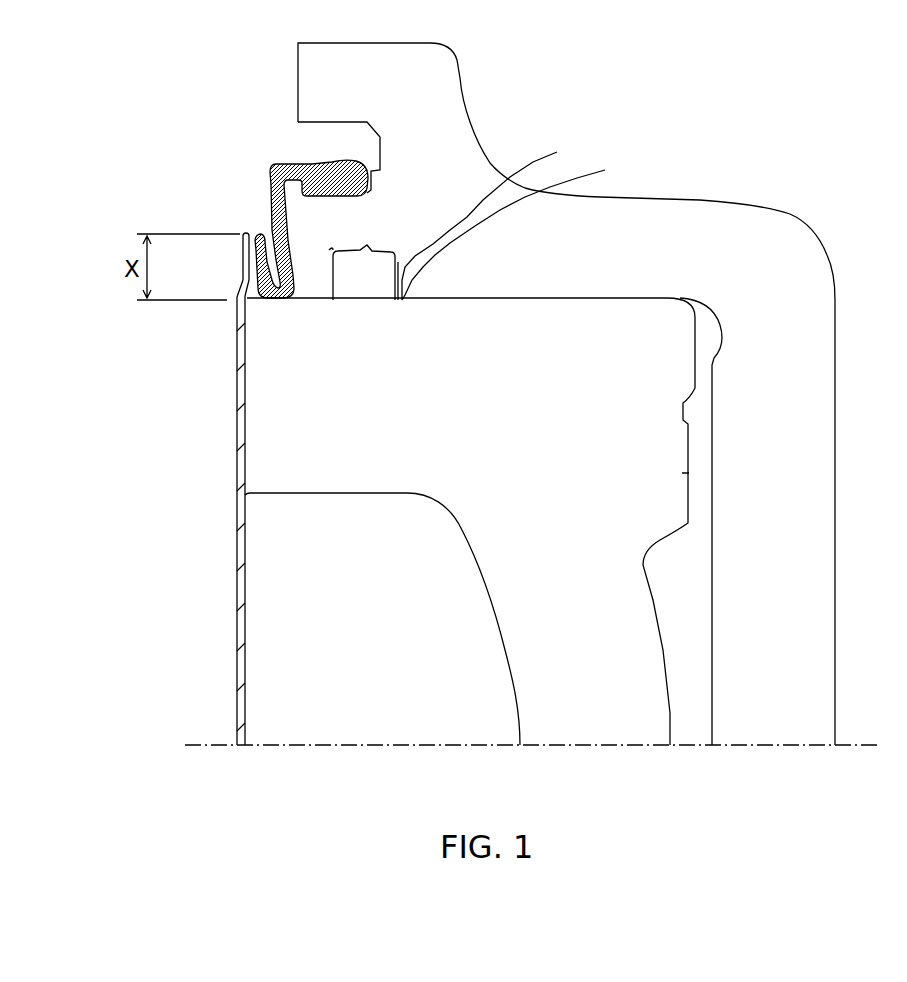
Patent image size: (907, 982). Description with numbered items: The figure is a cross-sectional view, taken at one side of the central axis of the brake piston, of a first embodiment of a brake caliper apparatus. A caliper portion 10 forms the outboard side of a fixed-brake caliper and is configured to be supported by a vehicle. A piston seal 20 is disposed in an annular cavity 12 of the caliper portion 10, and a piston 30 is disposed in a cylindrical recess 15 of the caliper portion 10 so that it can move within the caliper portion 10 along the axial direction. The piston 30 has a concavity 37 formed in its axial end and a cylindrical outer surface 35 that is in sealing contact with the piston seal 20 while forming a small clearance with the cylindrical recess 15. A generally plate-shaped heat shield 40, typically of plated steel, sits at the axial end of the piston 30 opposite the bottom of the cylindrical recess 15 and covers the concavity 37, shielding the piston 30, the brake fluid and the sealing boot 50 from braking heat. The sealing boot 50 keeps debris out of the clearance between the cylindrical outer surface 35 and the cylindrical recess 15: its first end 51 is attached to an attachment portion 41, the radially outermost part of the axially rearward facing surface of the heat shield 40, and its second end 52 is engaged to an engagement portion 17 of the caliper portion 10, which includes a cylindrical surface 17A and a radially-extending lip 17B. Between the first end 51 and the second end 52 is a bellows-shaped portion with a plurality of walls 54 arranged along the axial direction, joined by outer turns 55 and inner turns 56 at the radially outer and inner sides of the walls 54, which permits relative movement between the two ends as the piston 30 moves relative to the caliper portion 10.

The caliper portion 10 is at (464, 177).
The annular cavity 12 is at (498, 221).
The cylindrical recess 15 is at (688, 571).
The engagement portion 17 is at (319, 176).
The cylindrical surface 17A is at (335, 197).
The radially-extending lip 17B is at (292, 192).
The piston seal 20 is at (361, 277).
The piston 30 is at (372, 424).
The cylindrical outer surface 35 is at (525, 228).
The concavity 37 is at (513, 665).
The heat shield 40 is at (235, 500).
The attachment portion 41 is at (243, 237).
The sealing boot 50 is at (268, 224).
The first end 51 is at (260, 230).
The second end 52 is at (333, 195).
The walls 54 is at (287, 235).
The outer turns 55 is at (268, 167).
The inner turns 56 is at (278, 300).